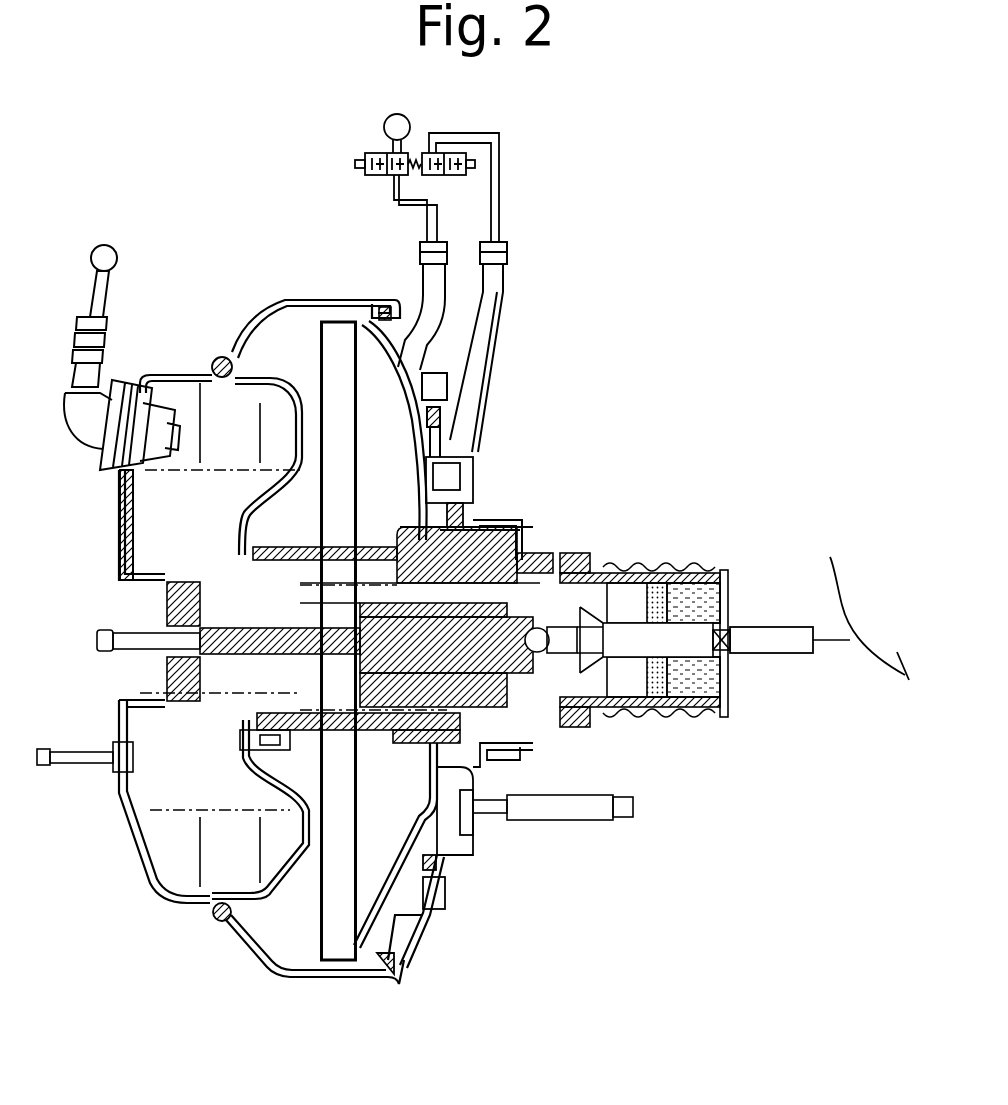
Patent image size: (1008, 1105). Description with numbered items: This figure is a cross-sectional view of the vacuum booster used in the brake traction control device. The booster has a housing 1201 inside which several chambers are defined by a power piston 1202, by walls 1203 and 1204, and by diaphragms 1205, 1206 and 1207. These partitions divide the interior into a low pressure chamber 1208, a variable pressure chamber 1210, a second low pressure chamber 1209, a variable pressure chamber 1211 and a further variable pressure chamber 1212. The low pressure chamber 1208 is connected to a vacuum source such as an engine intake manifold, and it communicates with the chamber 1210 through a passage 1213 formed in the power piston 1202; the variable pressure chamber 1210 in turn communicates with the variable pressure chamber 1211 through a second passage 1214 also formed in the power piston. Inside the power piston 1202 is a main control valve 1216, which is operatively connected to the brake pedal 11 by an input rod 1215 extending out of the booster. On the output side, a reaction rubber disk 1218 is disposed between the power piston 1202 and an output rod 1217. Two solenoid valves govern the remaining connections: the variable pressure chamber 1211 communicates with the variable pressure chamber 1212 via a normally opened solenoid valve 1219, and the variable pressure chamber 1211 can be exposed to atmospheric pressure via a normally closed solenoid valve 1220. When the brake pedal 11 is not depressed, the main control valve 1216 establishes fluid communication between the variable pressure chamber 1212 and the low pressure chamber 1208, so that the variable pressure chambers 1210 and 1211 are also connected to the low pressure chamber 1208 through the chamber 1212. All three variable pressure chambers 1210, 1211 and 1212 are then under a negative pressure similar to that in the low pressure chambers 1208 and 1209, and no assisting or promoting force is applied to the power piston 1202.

The brake pedal 11 is at (830, 570).
The housing 1201 is at (170, 907).
The power piston 1202 is at (507, 760).
The wall 1203 is at (260, 913).
The wall 1204 is at (440, 810).
The diaphragm 1205 is at (210, 918).
The diaphragm 1206 is at (357, 977).
The diaphragm 1207 is at (507, 540).
The low pressure chamber 1208 is at (157, 860).
The low pressure chamber 1209 is at (300, 950).
The variable pressure chamber 1210 is at (212, 360).
The variable pressure chamber 1211 is at (353, 297).
The variable pressure chamber 1212 is at (467, 500).
The passage 1213 is at (485, 590).
The passage 1214 is at (487, 803).
The input rod 1215 is at (780, 653).
The main control valve 1216 is at (603, 710).
The output rod 1217 is at (173, 617).
The reaction rubber disk 1218 is at (173, 670).
The normally opened solenoid valve 1219 is at (468, 158).
The normally closed solenoid valve 1220 is at (360, 152).